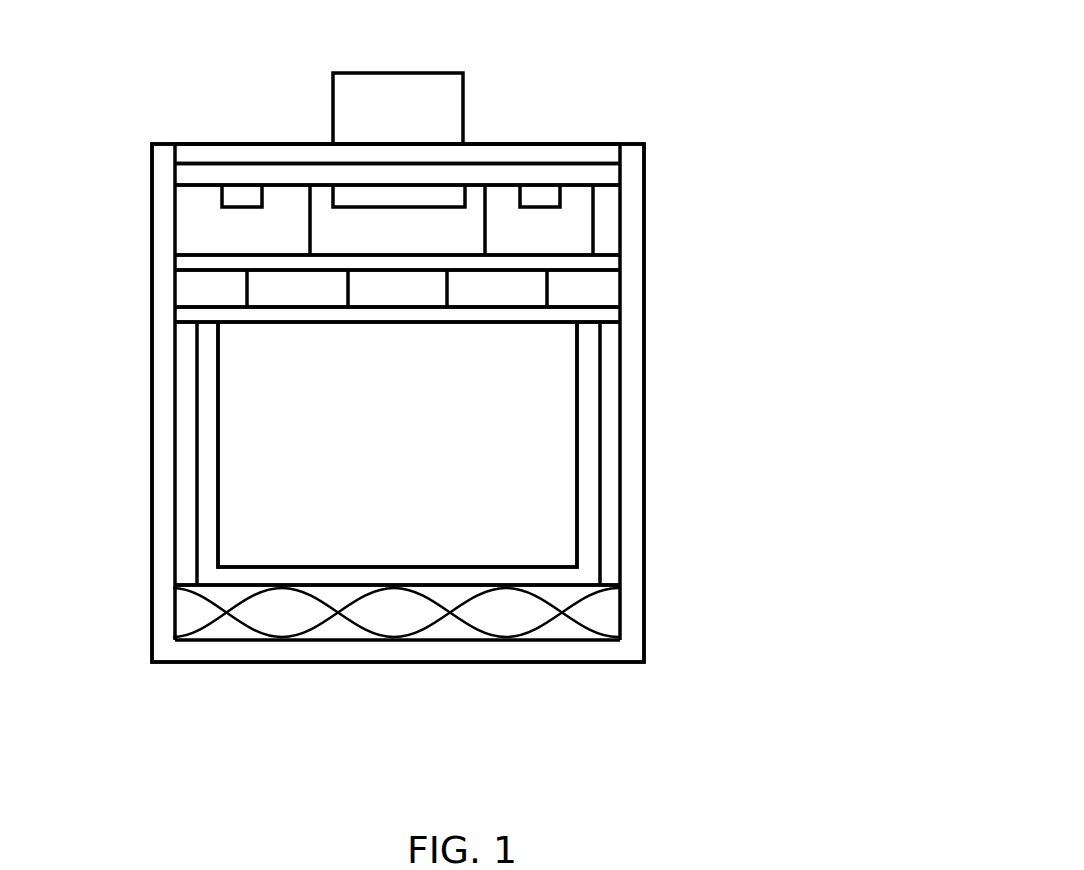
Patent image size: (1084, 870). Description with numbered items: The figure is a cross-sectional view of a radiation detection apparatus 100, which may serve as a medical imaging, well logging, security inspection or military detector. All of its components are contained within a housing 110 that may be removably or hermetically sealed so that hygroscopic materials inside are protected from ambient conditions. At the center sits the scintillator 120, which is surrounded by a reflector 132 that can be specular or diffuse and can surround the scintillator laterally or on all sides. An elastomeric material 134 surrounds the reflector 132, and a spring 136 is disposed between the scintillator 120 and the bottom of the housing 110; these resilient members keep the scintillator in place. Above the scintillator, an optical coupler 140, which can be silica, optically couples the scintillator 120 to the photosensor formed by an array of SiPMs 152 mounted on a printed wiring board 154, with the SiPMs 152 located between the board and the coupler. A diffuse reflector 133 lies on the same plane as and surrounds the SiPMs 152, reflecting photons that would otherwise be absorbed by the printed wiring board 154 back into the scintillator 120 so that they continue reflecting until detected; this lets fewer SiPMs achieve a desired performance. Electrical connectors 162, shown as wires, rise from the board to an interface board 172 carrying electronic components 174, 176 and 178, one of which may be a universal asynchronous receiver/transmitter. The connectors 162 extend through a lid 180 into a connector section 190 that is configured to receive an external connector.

The radiation detection apparatus 100 is at (840, 72).
The housing 110 is at (163, 497).
The scintillator 120 is at (425, 538).
The reflector 132 is at (210, 465).
The reflector 133 is at (200, 292).
The elastomeric material 134 is at (187, 448).
The spring 136 is at (385, 622).
The optical coupler 140 is at (187, 315).
The SiPM 152 is at (306, 291).
The printed wiring board 154 is at (187, 262).
The electrical connectors 162 is at (483, 243).
The interface board 172 is at (582, 175).
The electronic component 174 is at (240, 193).
The electronic component 176 is at (368, 197).
The electronic component 178 is at (538, 193).
The lid 180 is at (543, 152).
The connector section 190 is at (398, 94).